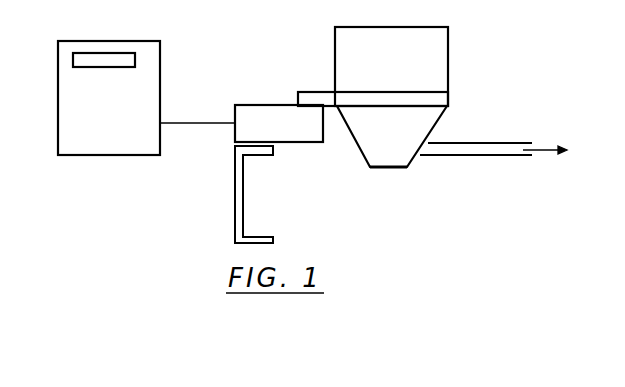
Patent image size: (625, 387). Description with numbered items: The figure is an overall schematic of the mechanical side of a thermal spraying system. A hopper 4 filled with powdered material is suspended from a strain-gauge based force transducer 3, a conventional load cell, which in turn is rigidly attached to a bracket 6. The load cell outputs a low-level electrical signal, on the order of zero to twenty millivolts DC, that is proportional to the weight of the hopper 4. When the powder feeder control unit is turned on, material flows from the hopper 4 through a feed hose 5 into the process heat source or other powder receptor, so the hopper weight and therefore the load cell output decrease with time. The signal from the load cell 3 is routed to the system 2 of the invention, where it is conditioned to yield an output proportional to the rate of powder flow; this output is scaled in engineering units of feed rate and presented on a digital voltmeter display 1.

The digital voltmeter display 1 is at (108, 53).
The system 2 is at (116, 147).
The strain-gauge based force transducer 3 is at (256, 116).
The hopper 4 is at (437, 67).
The feed hose 5 is at (463, 143).
The bracket 6 is at (235, 203).